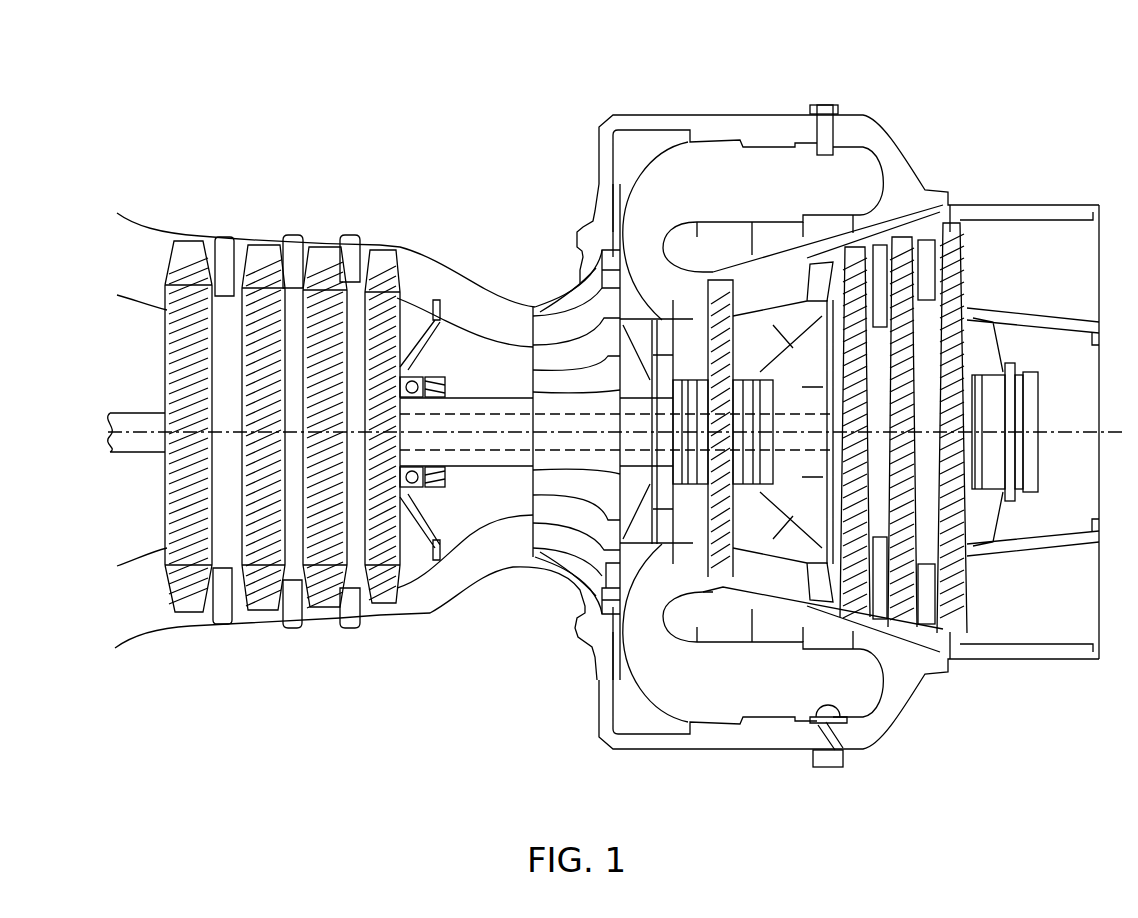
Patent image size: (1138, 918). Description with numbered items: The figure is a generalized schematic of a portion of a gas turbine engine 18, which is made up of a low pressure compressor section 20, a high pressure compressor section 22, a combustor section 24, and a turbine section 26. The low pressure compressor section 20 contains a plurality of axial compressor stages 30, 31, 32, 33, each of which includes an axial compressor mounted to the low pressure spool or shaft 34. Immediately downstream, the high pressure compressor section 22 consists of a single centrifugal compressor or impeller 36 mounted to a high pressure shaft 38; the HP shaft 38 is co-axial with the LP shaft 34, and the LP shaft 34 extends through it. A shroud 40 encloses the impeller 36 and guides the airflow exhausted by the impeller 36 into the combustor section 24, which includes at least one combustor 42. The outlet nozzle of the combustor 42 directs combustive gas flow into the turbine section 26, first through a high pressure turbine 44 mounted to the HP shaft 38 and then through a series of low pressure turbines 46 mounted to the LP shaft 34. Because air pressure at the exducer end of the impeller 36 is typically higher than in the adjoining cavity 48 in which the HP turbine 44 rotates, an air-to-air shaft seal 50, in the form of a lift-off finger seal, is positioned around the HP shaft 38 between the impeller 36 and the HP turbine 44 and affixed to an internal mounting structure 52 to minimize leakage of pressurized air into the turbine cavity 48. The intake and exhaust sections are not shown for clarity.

The gas turbine engine 18 is at (271, 119).
The low pressure compressor section 20 is at (407, 672).
The high pressure compressor section 22 is at (597, 672).
The combustor section 24 is at (927, 84).
The turbine section 26 is at (1103, 788).
The axial compressor stage 30 is at (222, 227).
The axial compressor stage 31 is at (290, 227).
The axial compressor stage 32 is at (355, 227).
The axial compressor stage 33 is at (418, 227).
The low pressure shaft 34 is at (130, 454).
The centrifugal impeller 36 is at (548, 302).
The high pressure shaft 38 is at (455, 472).
The shroud 40 is at (575, 278).
The combustor 42 is at (772, 193).
The high pressure turbine 44 is at (734, 292).
The low pressure turbines 46 is at (967, 268).
The high pressure turbine cavity 48 is at (683, 520).
The air-to-air shaft seal 50 is at (660, 386).
The internal mounting structure 52 is at (661, 323).